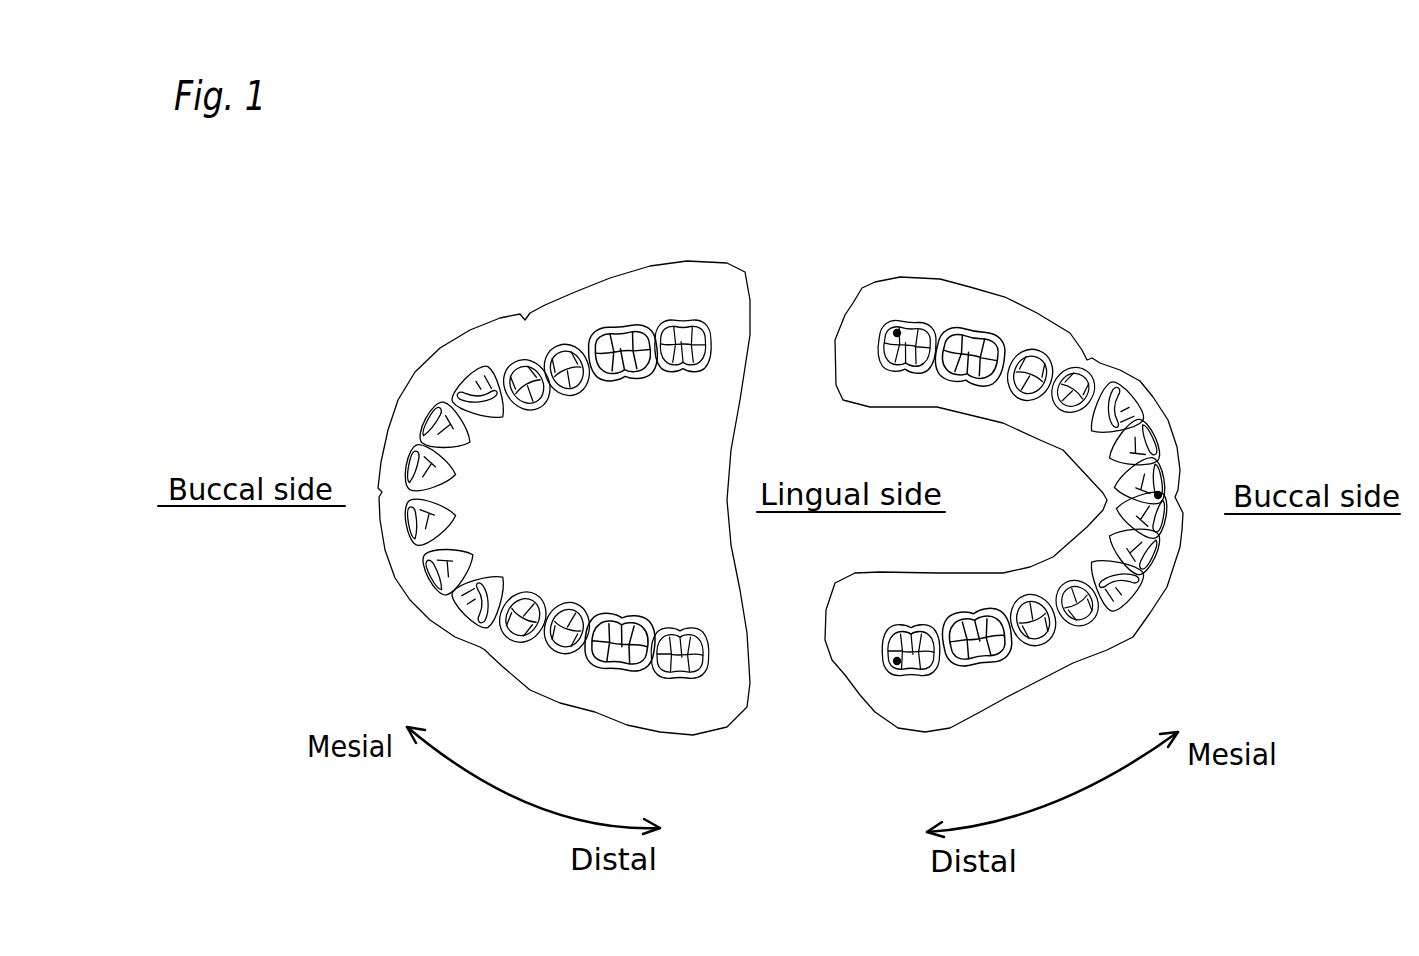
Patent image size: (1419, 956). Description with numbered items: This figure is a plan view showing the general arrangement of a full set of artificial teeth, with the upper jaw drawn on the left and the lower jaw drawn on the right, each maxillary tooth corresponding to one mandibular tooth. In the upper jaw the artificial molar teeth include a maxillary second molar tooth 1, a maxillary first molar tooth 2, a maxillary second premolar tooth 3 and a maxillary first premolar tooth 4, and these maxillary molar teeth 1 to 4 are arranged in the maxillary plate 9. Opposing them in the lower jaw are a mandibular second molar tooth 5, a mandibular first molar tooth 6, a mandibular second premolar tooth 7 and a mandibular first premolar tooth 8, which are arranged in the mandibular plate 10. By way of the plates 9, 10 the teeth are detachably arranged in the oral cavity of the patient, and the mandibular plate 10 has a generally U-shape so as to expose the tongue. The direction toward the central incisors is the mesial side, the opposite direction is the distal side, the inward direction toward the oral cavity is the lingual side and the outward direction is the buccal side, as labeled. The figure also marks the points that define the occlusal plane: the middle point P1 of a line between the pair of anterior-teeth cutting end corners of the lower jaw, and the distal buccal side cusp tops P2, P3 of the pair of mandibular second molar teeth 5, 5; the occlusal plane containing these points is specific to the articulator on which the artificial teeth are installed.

The maxillary second molar tooth 1 is at (677, 327).
The maxillary first molar tooth 2 is at (603, 333).
The maxillary second premolar tooth 3 is at (560, 347).
The maxillary first premolar tooth 4 is at (510, 360).
The mandibular second molar tooth 5 is at (903, 327).
The mandibular first molar tooth 6 is at (987, 337).
The mandibular second premolar tooth 7 is at (1030, 357).
The mandibular first premolar tooth 8 is at (1080, 377).
The maxillary plate 9 is at (717, 293).
The mandibular plate 10 is at (873, 297).
The middle point P1 is at (1158, 495).
The distal buccal side cusp top P2 is at (897, 333).
The distal buccal side cusp top P3 is at (897, 661).